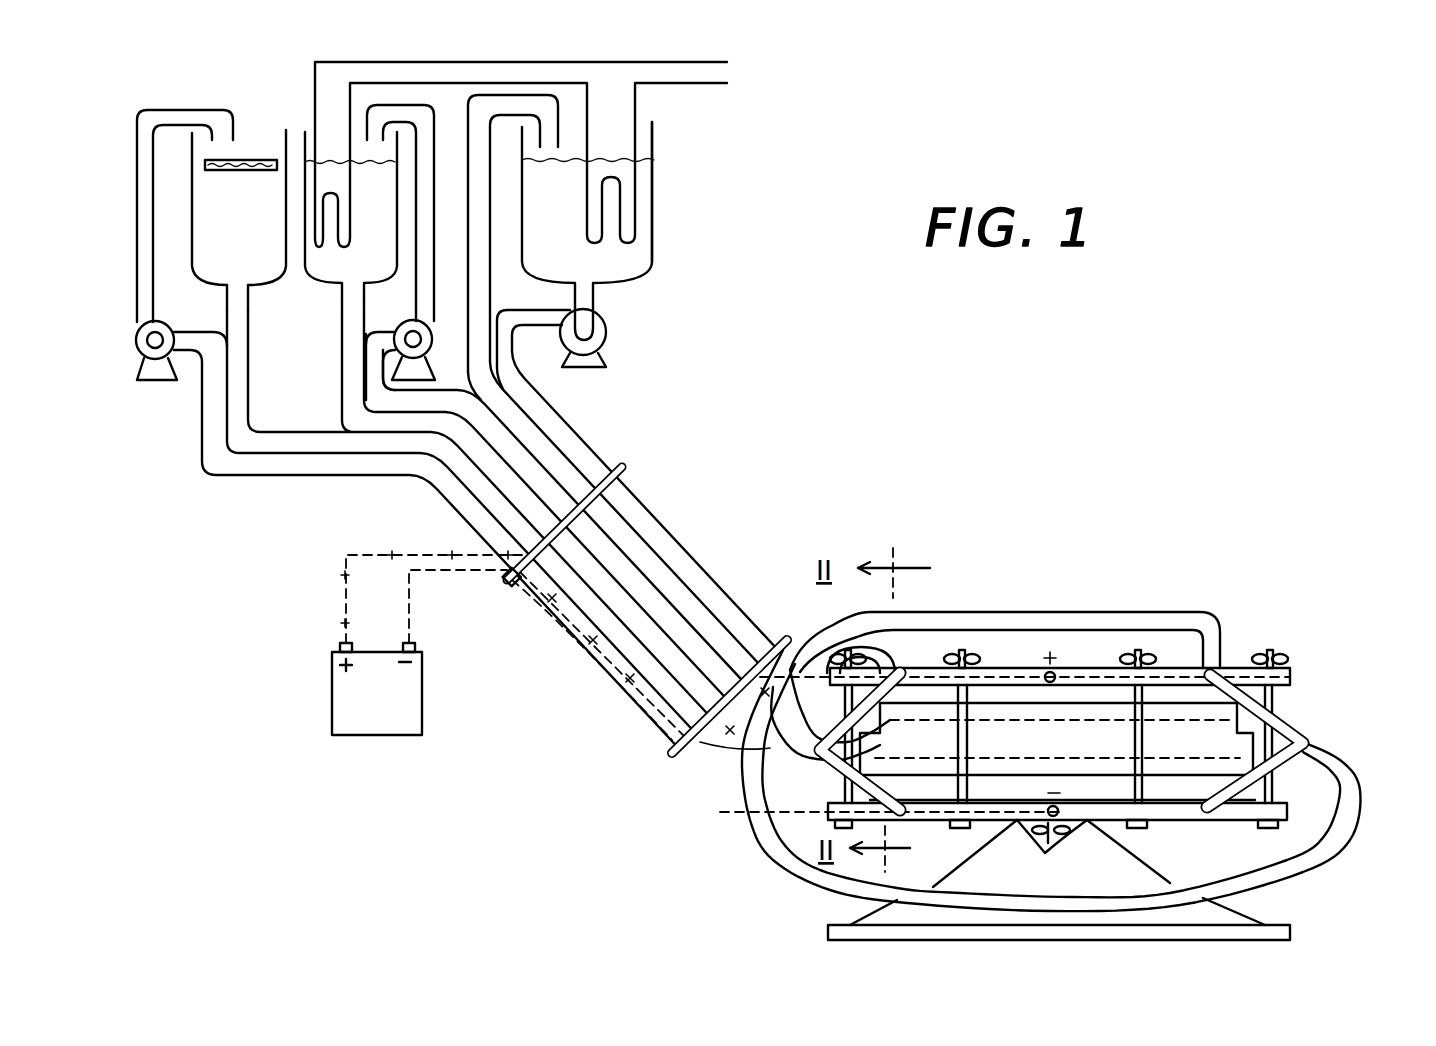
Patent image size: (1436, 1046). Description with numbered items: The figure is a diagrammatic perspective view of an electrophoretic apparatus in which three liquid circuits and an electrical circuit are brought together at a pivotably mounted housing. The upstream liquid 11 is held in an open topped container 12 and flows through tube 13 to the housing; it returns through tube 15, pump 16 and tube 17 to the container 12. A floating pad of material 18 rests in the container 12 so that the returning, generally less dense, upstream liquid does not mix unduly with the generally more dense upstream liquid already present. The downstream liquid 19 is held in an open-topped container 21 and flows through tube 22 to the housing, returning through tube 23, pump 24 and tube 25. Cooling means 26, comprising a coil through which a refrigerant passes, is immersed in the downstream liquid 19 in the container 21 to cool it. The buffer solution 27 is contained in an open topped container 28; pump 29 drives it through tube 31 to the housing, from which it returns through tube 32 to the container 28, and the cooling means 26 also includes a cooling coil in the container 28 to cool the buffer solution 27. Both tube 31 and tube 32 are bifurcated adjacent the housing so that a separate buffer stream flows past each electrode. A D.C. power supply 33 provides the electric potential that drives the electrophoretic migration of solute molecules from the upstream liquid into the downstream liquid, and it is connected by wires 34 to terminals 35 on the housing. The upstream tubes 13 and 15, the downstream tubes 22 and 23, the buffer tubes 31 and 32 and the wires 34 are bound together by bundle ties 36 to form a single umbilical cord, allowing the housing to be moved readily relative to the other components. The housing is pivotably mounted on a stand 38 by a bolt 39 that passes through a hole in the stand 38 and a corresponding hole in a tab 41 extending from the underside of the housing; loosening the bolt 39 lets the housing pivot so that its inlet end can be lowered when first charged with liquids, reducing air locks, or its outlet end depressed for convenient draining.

The upstream liquid 11 is at (212, 213).
The open topped container 12 is at (203, 289).
The tube 13 is at (250, 412).
The tube 15 is at (207, 468).
The pump 16 is at (182, 395).
The tube 17 is at (170, 115).
The floating pad of material 18 is at (223, 172).
The downstream liquid 19 is at (342, 273).
The open-topped container 21 is at (313, 280).
The tube 22 is at (347, 410).
The tube 23 is at (383, 403).
The pump 24 is at (434, 336).
The tube 25 is at (425, 255).
The cooling means 26 is at (312, 100).
The buffer solution 27 is at (630, 255).
The open topped container 28 is at (655, 190).
The pump 29 is at (608, 333).
The tube 31 is at (540, 322).
The tube 32 is at (483, 290).
The D.C. power supply 33 is at (410, 718).
The wires 34 is at (427, 558).
The terminals 35 is at (1078, 652).
The bundle ties 36 is at (630, 466).
The stand 38 is at (833, 938).
The bolt 39 is at (1027, 822).
The tab 41 is at (1048, 843).